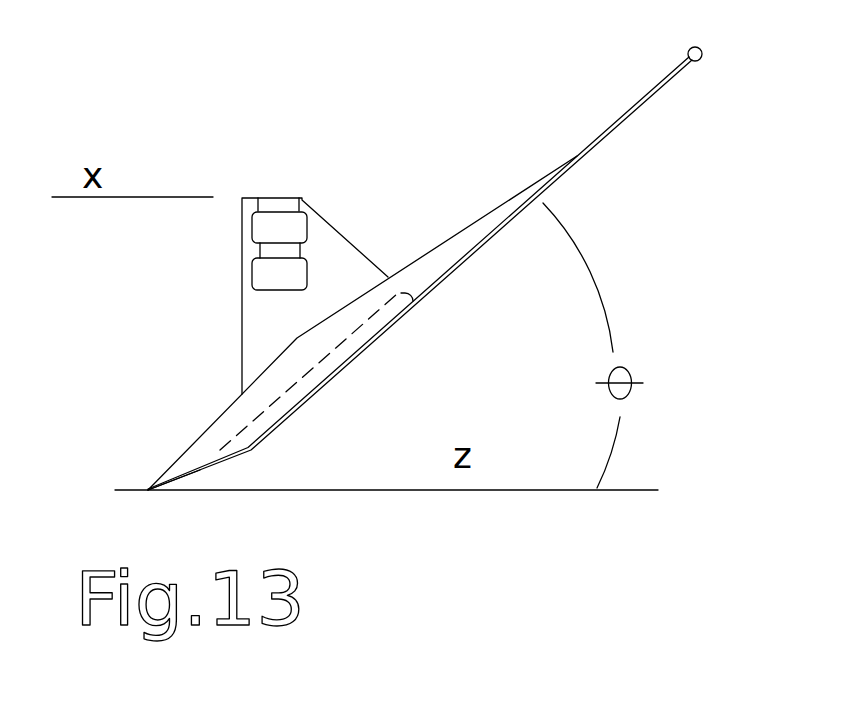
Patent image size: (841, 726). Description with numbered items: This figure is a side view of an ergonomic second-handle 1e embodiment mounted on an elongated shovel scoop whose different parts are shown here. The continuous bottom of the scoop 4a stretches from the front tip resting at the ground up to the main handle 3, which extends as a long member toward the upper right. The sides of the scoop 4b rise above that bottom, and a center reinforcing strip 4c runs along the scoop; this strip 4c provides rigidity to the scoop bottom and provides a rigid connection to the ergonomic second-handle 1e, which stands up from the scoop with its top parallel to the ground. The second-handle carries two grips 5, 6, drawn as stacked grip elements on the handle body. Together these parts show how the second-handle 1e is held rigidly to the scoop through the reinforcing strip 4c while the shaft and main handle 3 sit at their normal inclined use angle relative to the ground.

The ergonomic second-handle 1e is at (242, 267).
The main handle 3 is at (692, 68).
The continuous bottom of the scoop 4a is at (205, 460).
The sides of the scoop 4b is at (233, 400).
The center reinforcing strip 4c is at (401, 292).
The grip 5 is at (252, 199).
The grip 6 is at (280, 203).